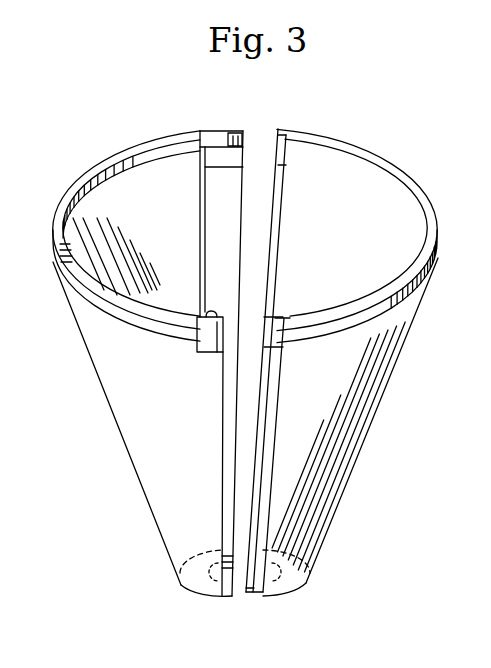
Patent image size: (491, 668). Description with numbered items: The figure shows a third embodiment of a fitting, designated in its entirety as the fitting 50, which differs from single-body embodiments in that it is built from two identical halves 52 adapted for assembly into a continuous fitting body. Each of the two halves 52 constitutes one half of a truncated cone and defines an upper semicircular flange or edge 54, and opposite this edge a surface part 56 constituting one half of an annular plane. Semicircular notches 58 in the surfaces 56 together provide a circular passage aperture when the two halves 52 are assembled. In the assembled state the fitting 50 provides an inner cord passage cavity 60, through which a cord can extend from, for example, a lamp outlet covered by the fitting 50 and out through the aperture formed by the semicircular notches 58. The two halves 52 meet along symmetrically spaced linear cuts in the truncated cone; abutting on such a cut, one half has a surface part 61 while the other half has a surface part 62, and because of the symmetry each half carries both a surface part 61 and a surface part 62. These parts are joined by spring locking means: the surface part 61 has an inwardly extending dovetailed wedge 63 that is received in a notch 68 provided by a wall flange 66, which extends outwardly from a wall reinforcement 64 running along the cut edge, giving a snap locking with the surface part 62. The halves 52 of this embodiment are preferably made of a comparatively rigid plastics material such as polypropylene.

The fitting 50 is at (358, 133).
The halves 52 is at (148, 436).
The semicircular flange 54 is at (136, 145).
The surface part 56 is at (190, 578).
The semicircular notches 58 is at (226, 575).
The inner cord passage cavity 60 is at (137, 207).
The surface part 61 is at (210, 495).
The surface part 62 is at (277, 503).
The dovetailed wedge 63 is at (194, 322).
The wall reinforcement 64 is at (222, 188).
The wall flange 66 is at (238, 133).
The notch 68 is at (224, 131).